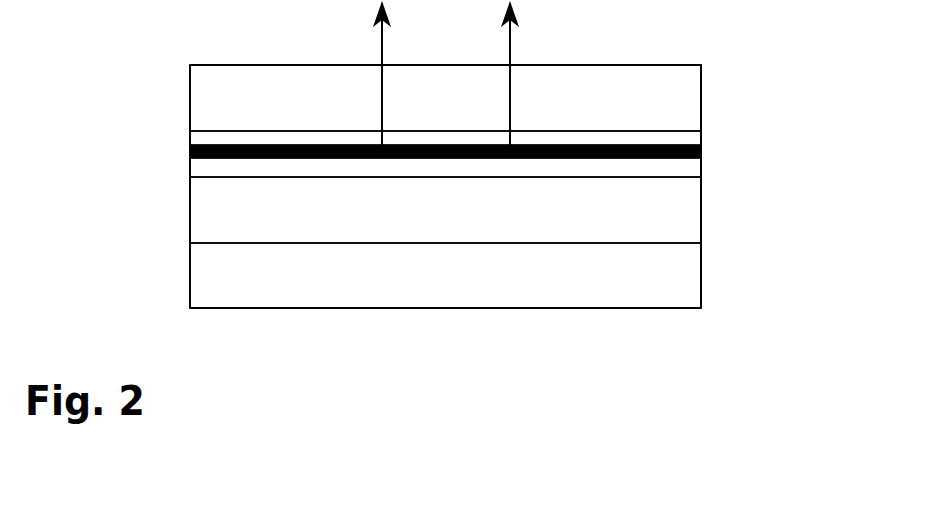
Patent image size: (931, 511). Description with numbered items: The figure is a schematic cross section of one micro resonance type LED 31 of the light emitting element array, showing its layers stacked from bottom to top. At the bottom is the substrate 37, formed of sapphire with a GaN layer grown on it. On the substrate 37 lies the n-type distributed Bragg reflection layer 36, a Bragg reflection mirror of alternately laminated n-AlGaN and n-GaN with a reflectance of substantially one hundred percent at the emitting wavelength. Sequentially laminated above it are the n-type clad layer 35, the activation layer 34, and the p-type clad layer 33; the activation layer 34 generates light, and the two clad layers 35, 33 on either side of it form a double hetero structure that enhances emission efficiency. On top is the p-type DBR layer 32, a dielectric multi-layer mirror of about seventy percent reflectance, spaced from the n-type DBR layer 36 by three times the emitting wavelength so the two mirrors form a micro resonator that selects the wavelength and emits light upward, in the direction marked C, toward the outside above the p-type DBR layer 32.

The LED 31 is at (158, 62).
The p-type DBR layer 32 is at (682, 102).
The p-type clad layer 33 is at (692, 138).
The activation layer 34 is at (701, 148).
The n-type clad layer 35 is at (701, 171).
The n-type distributed Bragg reflection (DBR) layer 36 is at (700, 214).
The substrate 37 is at (690, 276).
The light emission direction C is at (511, 53).